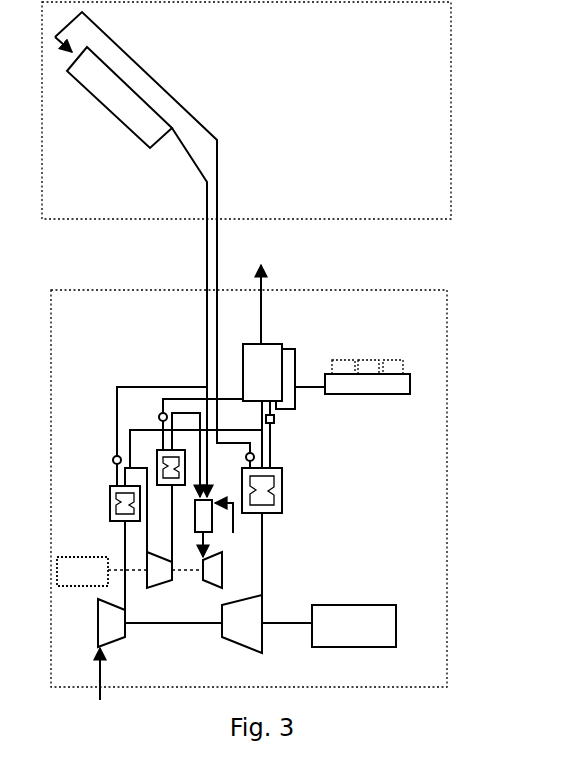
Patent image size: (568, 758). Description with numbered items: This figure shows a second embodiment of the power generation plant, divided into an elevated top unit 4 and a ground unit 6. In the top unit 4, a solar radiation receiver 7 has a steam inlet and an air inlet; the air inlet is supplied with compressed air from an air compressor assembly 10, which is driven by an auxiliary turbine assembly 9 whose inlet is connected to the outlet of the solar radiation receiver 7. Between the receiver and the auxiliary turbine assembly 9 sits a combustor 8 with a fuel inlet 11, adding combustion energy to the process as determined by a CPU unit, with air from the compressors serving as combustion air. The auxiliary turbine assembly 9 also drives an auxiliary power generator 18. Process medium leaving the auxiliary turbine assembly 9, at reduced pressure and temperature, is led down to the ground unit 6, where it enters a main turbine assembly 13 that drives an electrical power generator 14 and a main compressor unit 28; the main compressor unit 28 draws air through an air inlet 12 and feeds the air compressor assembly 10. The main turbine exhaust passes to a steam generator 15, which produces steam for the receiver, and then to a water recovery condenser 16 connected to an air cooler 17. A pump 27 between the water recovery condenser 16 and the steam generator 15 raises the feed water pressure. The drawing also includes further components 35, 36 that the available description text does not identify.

The top unit 4 is at (452, 134).
The ground unit 6 is at (449, 474).
The solar radiation receiver 7 is at (113, 100).
The combustor 8 is at (195, 533).
The auxiliary turbine assembly 9 is at (208, 582).
The air compressor assembly 10 is at (162, 582).
The fuel inlet 11 is at (234, 518).
The air inlet 12 is at (95, 666).
The main turbine assembly 13 is at (240, 633).
The electrical power generator 14 is at (375, 612).
The steam generator 15 is at (283, 495).
The water recovery condenser 16 is at (276, 360).
The air cooler 17 is at (363, 388).
The auxiliary power generator 18 is at (73, 562).
The pump 27 is at (278, 420).
The main compressor unit 28 is at (122, 638).
The heat exchanger 35 is at (111, 503).
The heat exchanger 36 is at (157, 452).